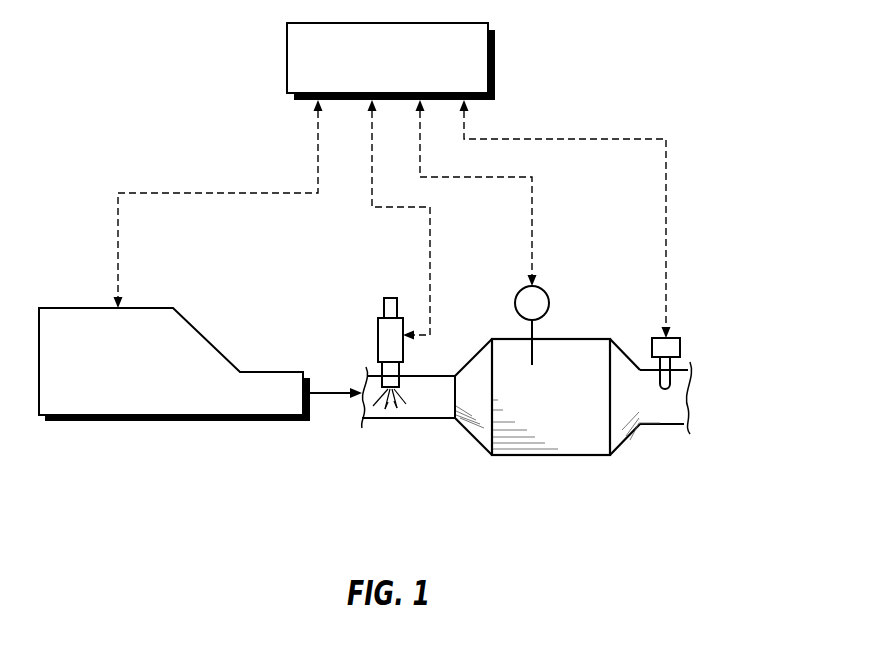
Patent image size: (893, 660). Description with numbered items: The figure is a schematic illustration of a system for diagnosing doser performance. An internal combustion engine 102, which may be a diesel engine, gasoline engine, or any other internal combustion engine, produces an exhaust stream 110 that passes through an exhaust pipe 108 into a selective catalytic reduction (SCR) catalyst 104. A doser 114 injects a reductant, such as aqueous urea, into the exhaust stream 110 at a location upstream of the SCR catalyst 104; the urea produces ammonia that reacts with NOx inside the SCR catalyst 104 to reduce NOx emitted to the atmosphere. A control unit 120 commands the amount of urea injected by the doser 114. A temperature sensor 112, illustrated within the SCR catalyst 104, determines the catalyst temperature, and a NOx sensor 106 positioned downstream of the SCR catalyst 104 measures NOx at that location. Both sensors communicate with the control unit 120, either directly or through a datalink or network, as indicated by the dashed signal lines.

The internal combustion engine 102 is at (143, 375).
The selective catalytic reduction catalyst 104 is at (582, 338).
The NOx sensor 106 is at (682, 347).
The exhaust pipe 108 is at (392, 413).
The exhaust stream 110 is at (320, 395).
The temperature sensor 112 is at (514, 303).
The doser 114 is at (378, 340).
The control unit 120 is at (409, 72).